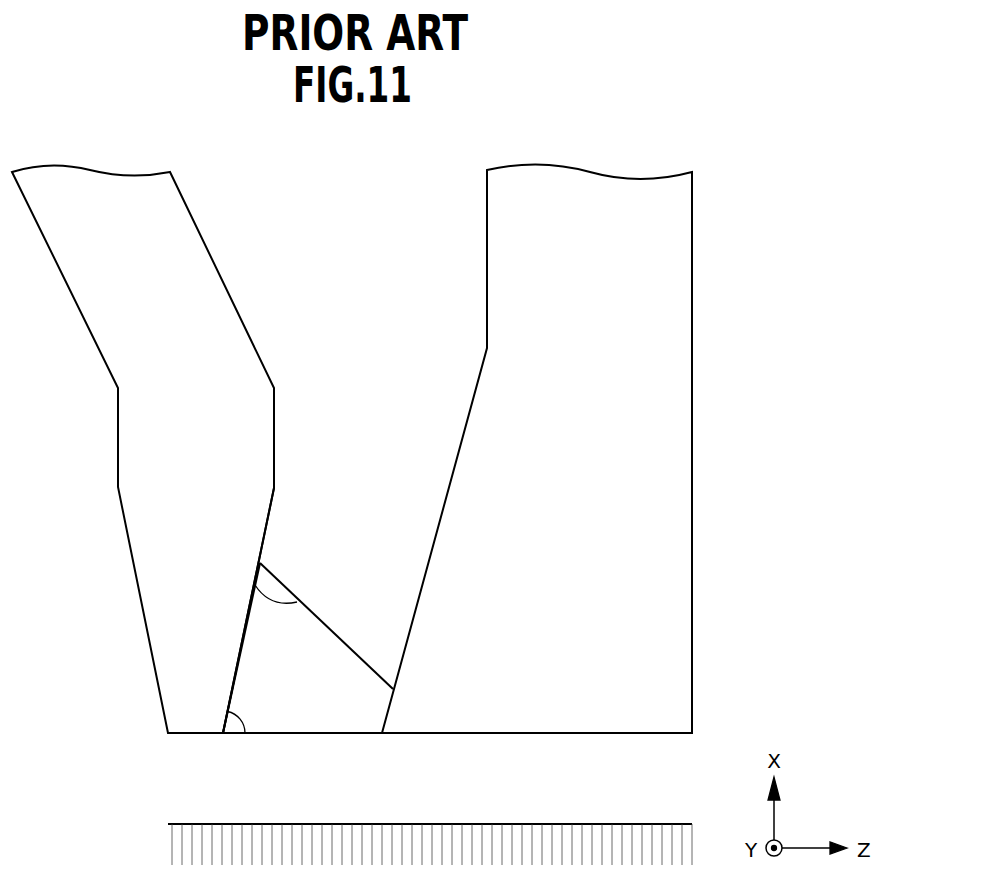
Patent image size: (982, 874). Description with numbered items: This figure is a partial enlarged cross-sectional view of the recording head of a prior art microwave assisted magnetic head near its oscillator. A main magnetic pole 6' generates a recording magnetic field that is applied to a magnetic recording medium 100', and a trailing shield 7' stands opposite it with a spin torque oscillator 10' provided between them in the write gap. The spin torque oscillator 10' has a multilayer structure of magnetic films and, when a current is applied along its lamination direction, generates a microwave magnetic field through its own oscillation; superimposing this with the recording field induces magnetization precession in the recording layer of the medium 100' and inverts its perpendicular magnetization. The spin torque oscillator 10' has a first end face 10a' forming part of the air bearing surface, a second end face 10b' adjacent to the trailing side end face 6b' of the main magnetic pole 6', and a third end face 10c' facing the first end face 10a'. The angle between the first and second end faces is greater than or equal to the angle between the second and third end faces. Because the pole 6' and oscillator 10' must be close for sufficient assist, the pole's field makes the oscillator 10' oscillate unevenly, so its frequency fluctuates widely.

The main magnetic pole 6' is at (143, 449).
The trailing side end face 6b' is at (292, 610).
The trailing shield 7' is at (569, 448).
The spin torque oscillator 10' is at (430, 761).
The first end face 10a' is at (302, 769).
The second end face 10b' is at (216, 679).
The third end face 10c' is at (328, 626).
The magnetic recording medium 100' is at (430, 821).